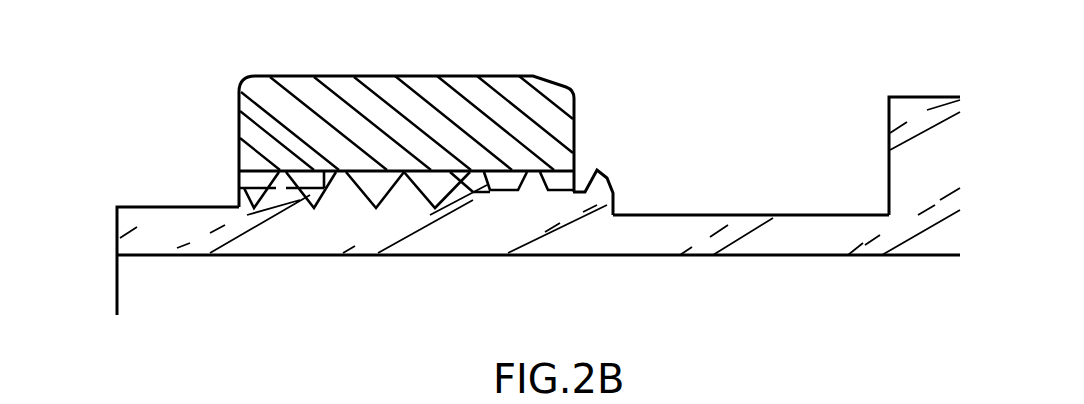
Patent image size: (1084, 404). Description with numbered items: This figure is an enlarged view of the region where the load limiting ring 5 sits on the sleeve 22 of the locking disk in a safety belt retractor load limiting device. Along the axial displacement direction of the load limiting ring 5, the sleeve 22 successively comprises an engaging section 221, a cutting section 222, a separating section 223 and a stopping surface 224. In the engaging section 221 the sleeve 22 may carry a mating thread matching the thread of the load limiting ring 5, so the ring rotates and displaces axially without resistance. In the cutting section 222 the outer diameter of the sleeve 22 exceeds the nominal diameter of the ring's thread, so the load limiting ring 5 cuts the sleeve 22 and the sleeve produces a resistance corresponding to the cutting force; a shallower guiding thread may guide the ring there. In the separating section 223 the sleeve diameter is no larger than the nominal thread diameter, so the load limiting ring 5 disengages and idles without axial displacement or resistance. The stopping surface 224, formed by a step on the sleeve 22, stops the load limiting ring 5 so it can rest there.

The load limiting ring 5 is at (483, 95).
The sleeve 22 is at (137, 225).
The engaging section 221 is at (382, 222).
The cutting section 222 is at (562, 230).
The separating section 223 is at (798, 217).
The stopping surface 224 is at (889, 120).